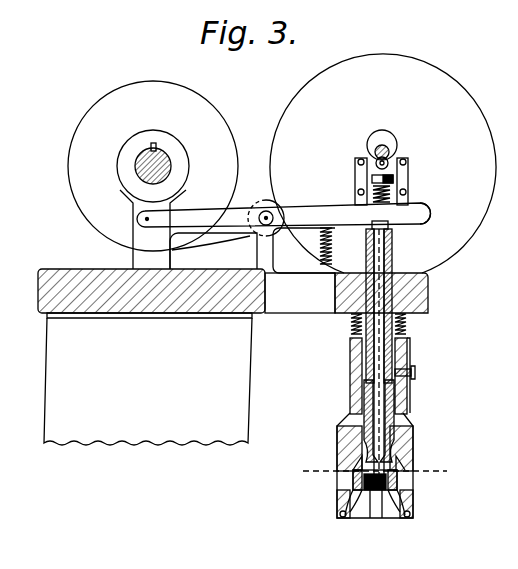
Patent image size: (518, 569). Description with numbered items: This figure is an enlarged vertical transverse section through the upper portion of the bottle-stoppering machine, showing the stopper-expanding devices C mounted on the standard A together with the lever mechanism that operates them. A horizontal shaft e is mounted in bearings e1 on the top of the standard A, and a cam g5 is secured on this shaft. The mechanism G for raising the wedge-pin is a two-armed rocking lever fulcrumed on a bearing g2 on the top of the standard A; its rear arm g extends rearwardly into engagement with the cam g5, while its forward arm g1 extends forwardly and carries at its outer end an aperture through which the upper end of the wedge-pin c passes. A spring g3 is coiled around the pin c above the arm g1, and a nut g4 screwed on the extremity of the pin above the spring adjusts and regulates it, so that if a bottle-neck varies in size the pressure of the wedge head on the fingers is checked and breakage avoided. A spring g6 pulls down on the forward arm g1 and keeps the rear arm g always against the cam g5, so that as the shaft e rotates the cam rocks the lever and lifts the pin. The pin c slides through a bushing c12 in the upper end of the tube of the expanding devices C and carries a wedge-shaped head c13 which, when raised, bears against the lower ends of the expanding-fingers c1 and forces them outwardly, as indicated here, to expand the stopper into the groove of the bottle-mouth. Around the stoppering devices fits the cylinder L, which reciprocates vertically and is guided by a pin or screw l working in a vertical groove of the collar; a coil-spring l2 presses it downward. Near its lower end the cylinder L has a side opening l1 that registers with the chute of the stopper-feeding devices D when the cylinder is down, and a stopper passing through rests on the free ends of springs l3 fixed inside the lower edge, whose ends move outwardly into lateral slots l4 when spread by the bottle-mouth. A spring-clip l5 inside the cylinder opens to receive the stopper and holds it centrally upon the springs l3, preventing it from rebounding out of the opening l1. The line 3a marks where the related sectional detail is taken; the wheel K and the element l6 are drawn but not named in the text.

The standard A is at (233, 357).
The wheel K is at (153, 166).
The stopper-feeding devices D is at (383, 163).
The wedge-pin raising mechanism G is at (266, 208).
The stopper-expanding devices C is at (365, 428).
The cylinder L is at (407, 472).
The horizontal shaft e is at (137, 172).
The bearings e1 is at (131, 256).
The rear arm of rocking lever g is at (284, 231).
The forward arm of rocking lever g1 is at (447, 206).
The bearing g2 is at (257, 256).
The spring g3 is at (392, 196).
The nut g4 is at (371, 178).
The cam g5 is at (181, 149).
The spring g6 is at (320, 243).
The wedge-pin c is at (388, 250).
The expanding-fingers c1 is at (389, 460).
The bushing c12 is at (368, 272).
The wedge-shaped head c13 is at (358, 485).
The pin or screw l is at (415, 372).
The side opening l1 is at (378, 482).
The coil-spring l2 is at (403, 327).
The springs l3 is at (345, 518).
The lateral slots l4 is at (405, 488).
The spring-clip l5 is at (393, 472).
The screw boss l6 is at (408, 353).
The section line 3a is at (376, 468).